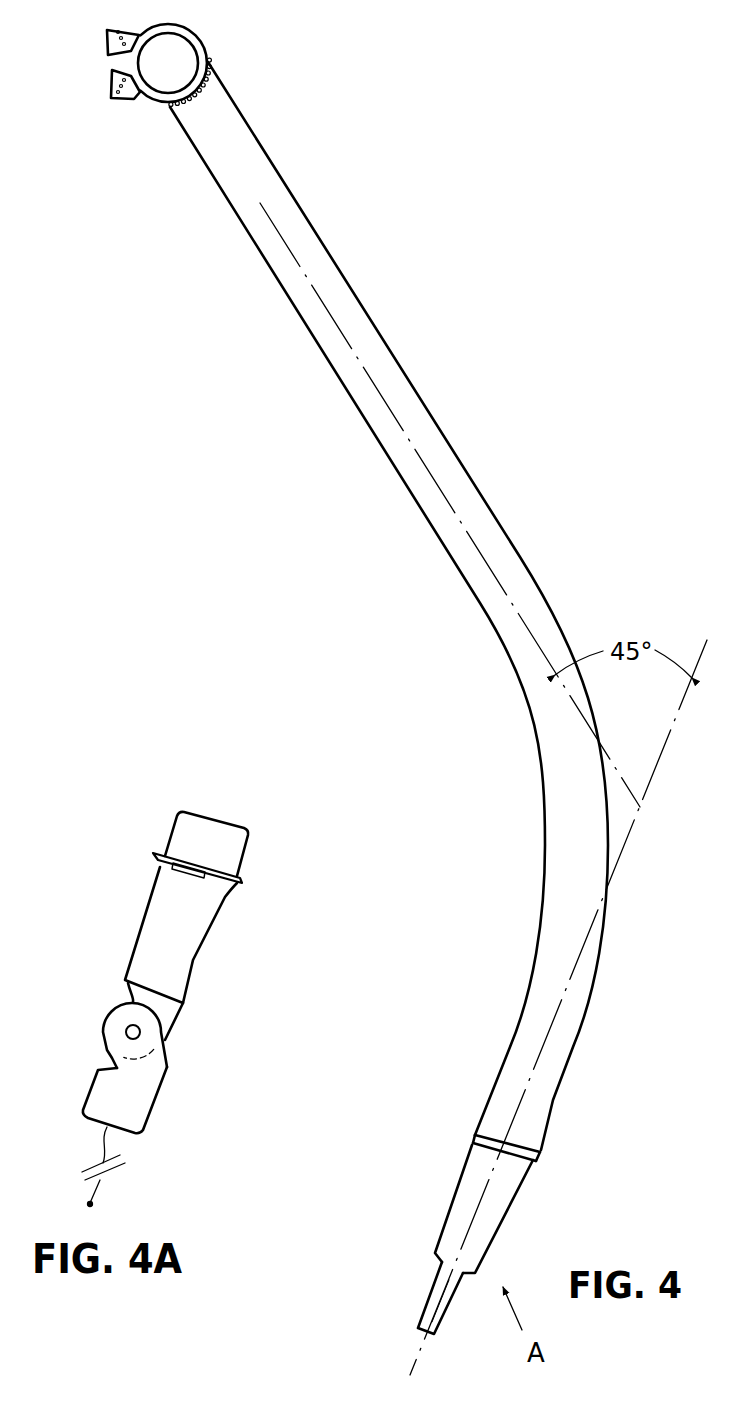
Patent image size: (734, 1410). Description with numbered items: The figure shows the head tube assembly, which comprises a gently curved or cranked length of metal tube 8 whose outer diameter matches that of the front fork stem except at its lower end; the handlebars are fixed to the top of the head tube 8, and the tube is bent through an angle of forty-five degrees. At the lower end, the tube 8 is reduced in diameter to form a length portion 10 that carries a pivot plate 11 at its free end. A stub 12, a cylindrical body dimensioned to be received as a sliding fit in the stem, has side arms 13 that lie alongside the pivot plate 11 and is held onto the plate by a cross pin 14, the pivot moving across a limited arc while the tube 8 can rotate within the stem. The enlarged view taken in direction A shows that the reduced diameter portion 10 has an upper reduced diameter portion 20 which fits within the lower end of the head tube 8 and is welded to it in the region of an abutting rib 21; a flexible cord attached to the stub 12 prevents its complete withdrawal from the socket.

In FIG. 4, the head tube 8 is at (393, 476).
In FIG. 4, the reduced diameter length portion 10 is at (457, 1190).
In FIG. 4A, the reduced diameter length portion 10 is at (204, 955).
In FIG. 4, the pivot plate 11 is at (428, 1302).
In FIG. 4A, the stub 12 is at (163, 1098).
In FIG. 4A, the side arms 13 is at (168, 1052).
In FIG. 4A, the cross pin 14 is at (126, 1032).
In FIG. 4A, the upper reduced diameter portion 20 is at (241, 858).
In FIG. 4A, the abutting rib 21 is at (155, 856).